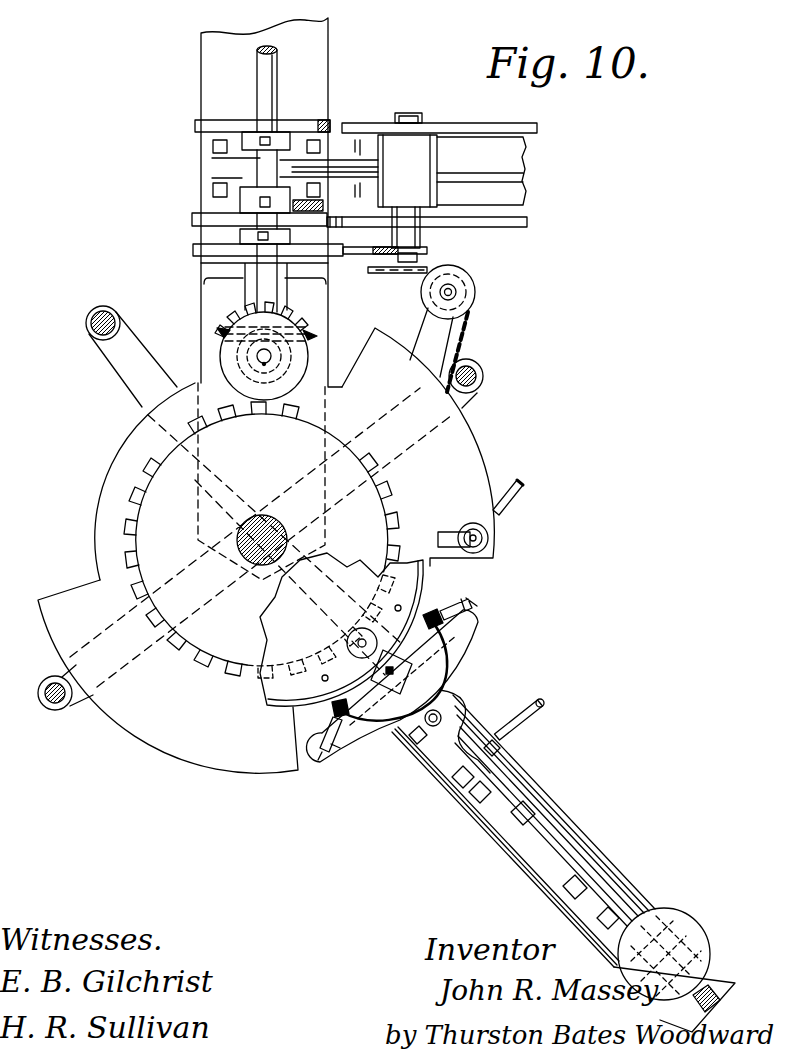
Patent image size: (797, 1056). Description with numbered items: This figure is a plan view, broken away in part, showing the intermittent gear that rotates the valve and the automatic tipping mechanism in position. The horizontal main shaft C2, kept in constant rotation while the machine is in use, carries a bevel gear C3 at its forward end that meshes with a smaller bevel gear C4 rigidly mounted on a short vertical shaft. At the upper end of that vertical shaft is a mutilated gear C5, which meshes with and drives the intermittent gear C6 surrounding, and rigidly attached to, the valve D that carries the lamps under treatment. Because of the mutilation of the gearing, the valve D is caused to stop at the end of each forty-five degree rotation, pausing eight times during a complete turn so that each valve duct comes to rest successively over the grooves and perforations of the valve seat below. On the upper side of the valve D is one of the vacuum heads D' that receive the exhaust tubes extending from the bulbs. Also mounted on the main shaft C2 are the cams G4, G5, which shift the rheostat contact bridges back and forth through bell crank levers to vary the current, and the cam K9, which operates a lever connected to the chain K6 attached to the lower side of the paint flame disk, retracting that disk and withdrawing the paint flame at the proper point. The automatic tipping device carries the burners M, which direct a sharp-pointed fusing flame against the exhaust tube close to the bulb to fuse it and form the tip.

The horizontal main shaft C2 is at (257, 80).
The rheostat-controlling cam G4 is at (195, 126).
The rheostat-controlling cam G5 is at (192, 219).
The cam K9 is at (193, 249).
The bevel gear C3 is at (215, 332).
The smaller bevel gear C4 is at (243, 357).
The mutilated gear C5 is at (220, 360).
The chain K6 is at (460, 333).
The intermittent gear C6 is at (266, 550).
The valve D is at (341, 629).
The vacuum head D' is at (345, 634).
The burner M is at (432, 623).